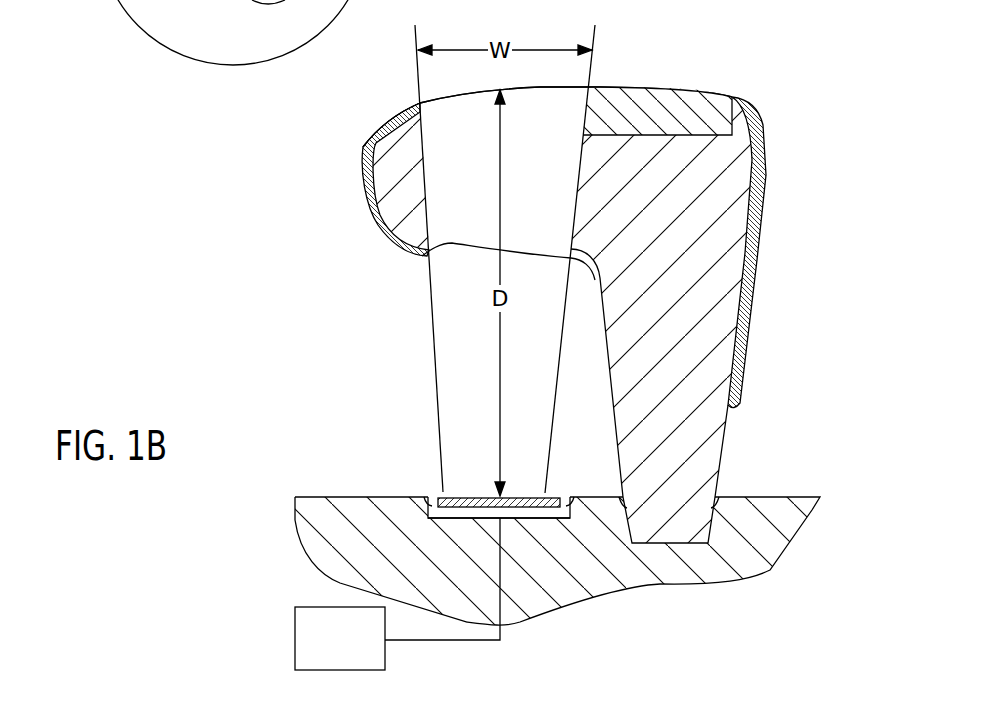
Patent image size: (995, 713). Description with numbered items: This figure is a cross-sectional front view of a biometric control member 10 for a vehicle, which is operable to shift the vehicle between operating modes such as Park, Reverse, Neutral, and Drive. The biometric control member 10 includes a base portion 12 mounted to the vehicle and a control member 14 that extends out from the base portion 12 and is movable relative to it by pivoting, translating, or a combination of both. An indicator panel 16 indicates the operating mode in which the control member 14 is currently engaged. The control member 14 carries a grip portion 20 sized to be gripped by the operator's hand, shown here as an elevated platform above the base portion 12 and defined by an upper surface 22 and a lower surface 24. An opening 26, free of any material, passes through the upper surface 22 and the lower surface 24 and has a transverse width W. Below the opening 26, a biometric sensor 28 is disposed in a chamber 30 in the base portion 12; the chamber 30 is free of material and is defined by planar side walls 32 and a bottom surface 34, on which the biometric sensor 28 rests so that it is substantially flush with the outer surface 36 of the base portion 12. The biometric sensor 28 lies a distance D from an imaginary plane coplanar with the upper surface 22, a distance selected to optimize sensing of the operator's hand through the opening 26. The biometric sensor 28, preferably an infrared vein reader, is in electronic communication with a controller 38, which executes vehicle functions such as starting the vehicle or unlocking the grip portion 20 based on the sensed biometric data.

The biometric control member 10 is at (340, 211).
The base portion 12 is at (785, 518).
The control member 14 is at (778, 112).
The indicator panel 16 is at (668, 98).
The grip portion 20 is at (753, 230).
The upper surface 22 is at (392, 108).
The lower surface 24 is at (420, 257).
The opening 26 is at (445, 185).
The biometric sensor 28 is at (527, 493).
The chamber 30 is at (472, 508).
The planar side walls 32 is at (426, 499).
The bottom surface 34 is at (515, 520).
The outer surface 36 is at (326, 494).
The controller 38 is at (328, 650).